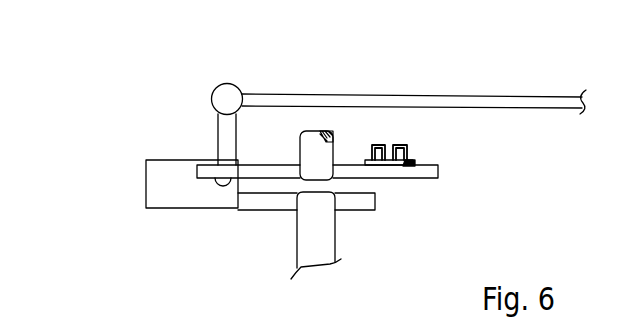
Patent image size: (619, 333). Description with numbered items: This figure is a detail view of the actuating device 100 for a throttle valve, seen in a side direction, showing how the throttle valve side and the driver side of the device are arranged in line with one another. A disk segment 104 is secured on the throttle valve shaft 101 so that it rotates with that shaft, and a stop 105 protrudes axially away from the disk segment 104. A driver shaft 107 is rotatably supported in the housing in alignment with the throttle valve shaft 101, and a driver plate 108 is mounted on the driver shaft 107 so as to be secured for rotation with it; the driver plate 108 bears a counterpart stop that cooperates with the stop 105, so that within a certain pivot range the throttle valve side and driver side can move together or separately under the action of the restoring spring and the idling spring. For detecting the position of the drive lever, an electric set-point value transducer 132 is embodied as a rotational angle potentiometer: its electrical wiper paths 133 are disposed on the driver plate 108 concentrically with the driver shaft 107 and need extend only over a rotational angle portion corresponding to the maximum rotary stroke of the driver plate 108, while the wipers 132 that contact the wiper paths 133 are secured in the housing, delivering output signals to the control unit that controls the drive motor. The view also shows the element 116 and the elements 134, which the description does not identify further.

The actuating device 100 is at (200, 143).
The throttle valve shaft 101 is at (313, 220).
The disk segment 104 is at (260, 203).
The stop 105 is at (155, 183).
The driver shaft 107 is at (313, 152).
The driver plate 108 is at (422, 172).
The control rod 116 is at (355, 101).
The set-point value transducer 132 is at (397, 166).
The wiper paths 133 is at (415, 160).
The contact clips 134 is at (399, 151).